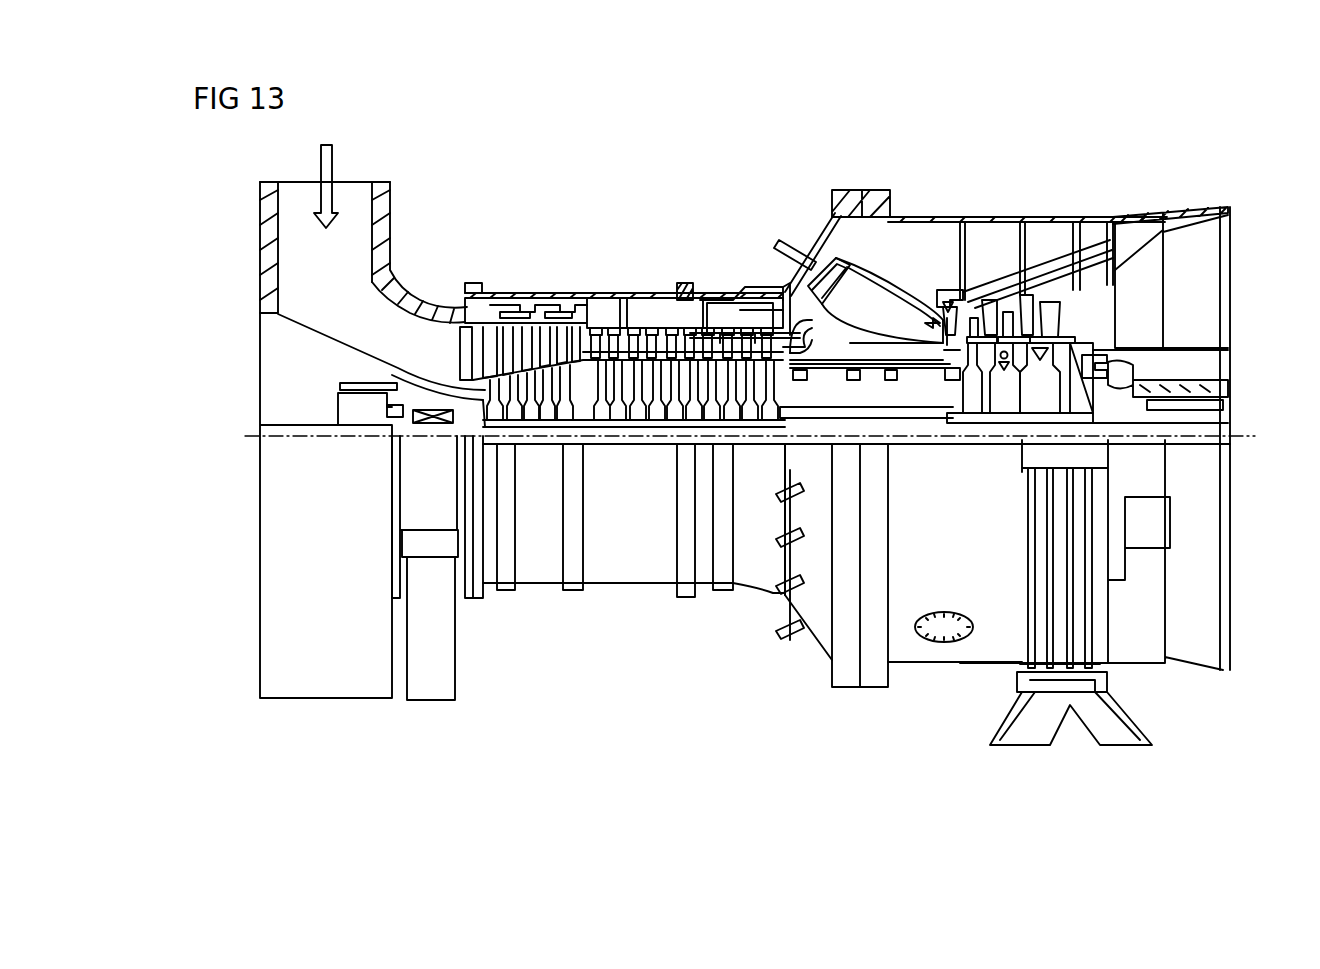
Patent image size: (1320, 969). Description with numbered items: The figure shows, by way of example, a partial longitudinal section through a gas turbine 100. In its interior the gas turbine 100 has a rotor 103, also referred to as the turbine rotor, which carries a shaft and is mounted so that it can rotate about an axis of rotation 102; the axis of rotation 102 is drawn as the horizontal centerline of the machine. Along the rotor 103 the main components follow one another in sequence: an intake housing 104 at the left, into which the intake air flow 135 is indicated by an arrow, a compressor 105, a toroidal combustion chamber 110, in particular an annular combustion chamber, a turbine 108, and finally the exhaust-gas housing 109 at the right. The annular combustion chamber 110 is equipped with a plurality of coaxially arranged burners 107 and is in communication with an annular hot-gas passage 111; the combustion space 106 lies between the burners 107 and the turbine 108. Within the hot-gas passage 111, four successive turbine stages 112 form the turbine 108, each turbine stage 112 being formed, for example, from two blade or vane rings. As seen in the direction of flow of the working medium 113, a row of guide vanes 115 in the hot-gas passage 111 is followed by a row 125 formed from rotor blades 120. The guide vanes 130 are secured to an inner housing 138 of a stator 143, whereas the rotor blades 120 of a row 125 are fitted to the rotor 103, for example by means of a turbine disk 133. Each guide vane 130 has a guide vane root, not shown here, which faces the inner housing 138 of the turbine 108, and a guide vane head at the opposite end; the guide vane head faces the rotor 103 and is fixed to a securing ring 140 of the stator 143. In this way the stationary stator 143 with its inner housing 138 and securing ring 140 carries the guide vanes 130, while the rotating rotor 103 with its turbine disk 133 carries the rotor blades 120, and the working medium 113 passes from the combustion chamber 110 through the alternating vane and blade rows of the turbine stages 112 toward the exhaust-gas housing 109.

The gas turbine 100 is at (617, 185).
The axis of rotation 102 is at (750, 463).
The rotor 103 is at (780, 420).
The intake housing 104 is at (388, 237).
The compressor 105 is at (552, 282).
The combustion chamber 106 is at (880, 318).
The burner 107 is at (783, 246).
The turbine 108 is at (1007, 322).
The exhaust-gas housing 109 is at (1153, 222).
The annular combustion chamber 110 is at (860, 280).
The hot-gas passage 111 is at (1087, 290).
The turbine stage 112 is at (1168, 284).
The working medium 113 is at (860, 280).
The guide vanes 115 is at (1040, 245).
The rotor blades 120 is at (1010, 320).
The row of rotor blades 125 is at (1088, 230).
The guide vane 130 is at (970, 317).
The turbine disk 133 is at (1063, 403).
The intake air flow 135 is at (333, 173).
The inner housing 138 is at (992, 260).
The securing ring 140 is at (950, 310).
The stator 143 is at (933, 213).